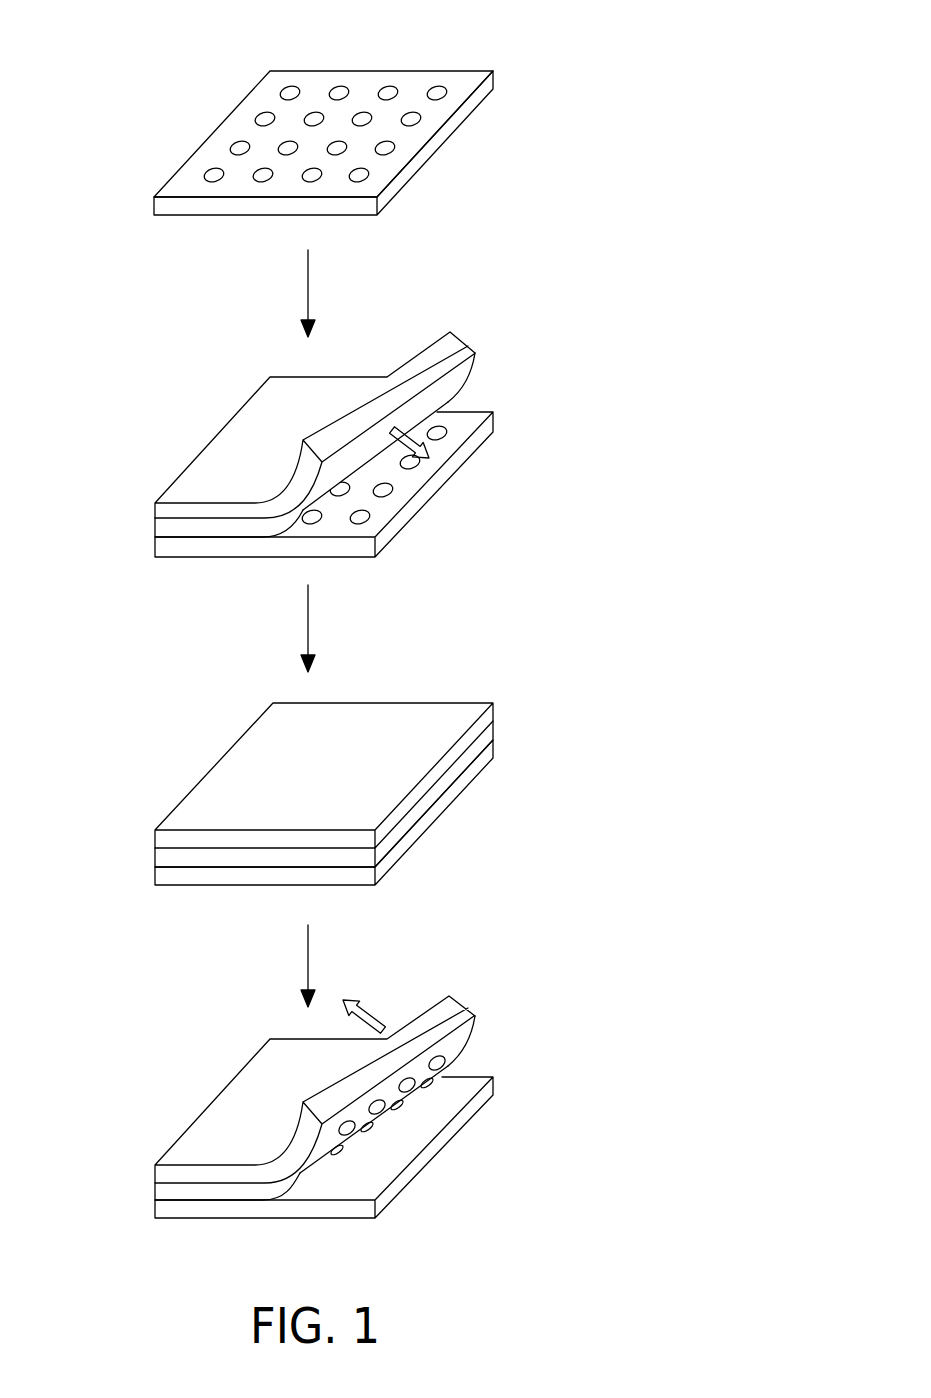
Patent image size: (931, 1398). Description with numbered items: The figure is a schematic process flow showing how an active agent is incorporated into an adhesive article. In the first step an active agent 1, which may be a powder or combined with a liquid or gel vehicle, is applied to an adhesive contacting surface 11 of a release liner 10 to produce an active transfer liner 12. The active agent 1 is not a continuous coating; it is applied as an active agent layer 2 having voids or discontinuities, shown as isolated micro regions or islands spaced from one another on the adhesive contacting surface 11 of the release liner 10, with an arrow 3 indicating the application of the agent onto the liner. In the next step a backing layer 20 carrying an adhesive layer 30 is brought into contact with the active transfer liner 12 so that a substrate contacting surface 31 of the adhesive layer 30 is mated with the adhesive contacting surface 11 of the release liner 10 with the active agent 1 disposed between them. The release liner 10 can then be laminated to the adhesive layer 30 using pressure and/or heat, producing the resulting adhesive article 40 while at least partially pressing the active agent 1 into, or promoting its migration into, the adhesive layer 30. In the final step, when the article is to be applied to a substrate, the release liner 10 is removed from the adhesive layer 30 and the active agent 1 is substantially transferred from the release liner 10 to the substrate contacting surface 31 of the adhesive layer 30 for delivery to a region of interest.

The active agent 1 is at (339, 85).
The active agent layer 2 is at (235, 126).
The transfer direction 3 is at (409, 82).
The release liner 10 is at (463, 112).
The adhesive contacting surface 11 is at (463, 80).
The active transfer liner 12 is at (143, 127).
The backing layer 20 is at (433, 350).
The adhesive layer 30 is at (474, 350).
The substrate contacting surface 31 is at (452, 392).
The adhesive article 40 is at (168, 729).